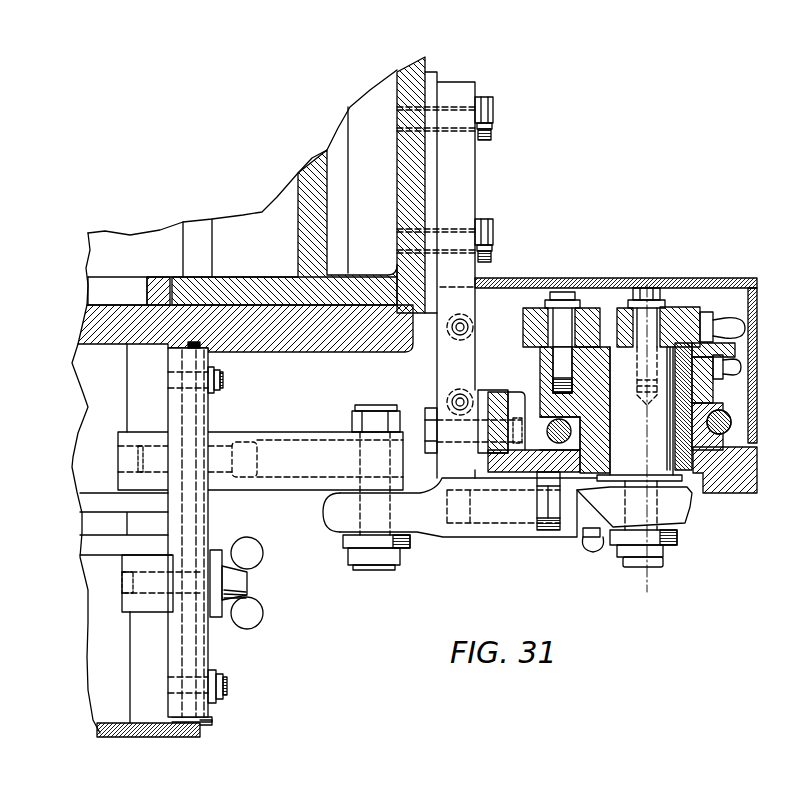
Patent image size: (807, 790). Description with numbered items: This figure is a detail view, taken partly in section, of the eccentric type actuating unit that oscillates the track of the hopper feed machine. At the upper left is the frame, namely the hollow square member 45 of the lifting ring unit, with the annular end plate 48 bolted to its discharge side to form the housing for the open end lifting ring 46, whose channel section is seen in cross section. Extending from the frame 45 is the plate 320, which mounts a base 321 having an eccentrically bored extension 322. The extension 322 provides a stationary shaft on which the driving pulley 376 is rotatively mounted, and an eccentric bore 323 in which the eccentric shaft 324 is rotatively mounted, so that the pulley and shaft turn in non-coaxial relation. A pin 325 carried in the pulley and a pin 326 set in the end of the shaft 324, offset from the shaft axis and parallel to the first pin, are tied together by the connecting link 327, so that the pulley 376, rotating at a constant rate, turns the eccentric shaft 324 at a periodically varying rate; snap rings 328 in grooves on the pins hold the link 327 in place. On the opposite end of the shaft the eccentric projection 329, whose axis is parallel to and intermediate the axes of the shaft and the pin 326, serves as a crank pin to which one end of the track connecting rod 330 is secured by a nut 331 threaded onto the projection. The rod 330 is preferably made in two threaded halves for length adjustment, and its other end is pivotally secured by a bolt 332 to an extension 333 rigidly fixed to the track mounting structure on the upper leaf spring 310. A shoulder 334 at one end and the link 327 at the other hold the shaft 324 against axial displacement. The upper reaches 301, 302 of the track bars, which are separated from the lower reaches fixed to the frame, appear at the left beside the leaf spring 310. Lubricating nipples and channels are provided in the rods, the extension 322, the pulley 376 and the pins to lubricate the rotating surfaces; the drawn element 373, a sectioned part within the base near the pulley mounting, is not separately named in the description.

The hollow square member 45 is at (427, 57).
The lifting ring 46 is at (247, 215).
The annular end plate 48 is at (87, 318).
The upper reach 301 is at (84, 500).
The upper reach 302 is at (88, 546).
The upper leaf spring 310 is at (132, 625).
The plate 320 is at (478, 159).
The base 321 is at (485, 390).
The eccentrically bored extension 322 is at (540, 408).
The eccentric bore 323 is at (615, 357).
The eccentric shaft 324 is at (662, 482).
The pin 325 is at (548, 300).
The pin 326 is at (648, 292).
The connecting link 327 is at (685, 310).
The snap rings 328 is at (580, 300).
The eccentric projection 329 is at (652, 567).
The track connecting rod 330 is at (505, 540).
The nut 331 is at (672, 548).
The bolt 332 is at (362, 563).
The extension 333 is at (290, 432).
The shoulder 334 is at (585, 542).
The ball 373 is at (740, 425).
The driving pulley 376 is at (733, 342).